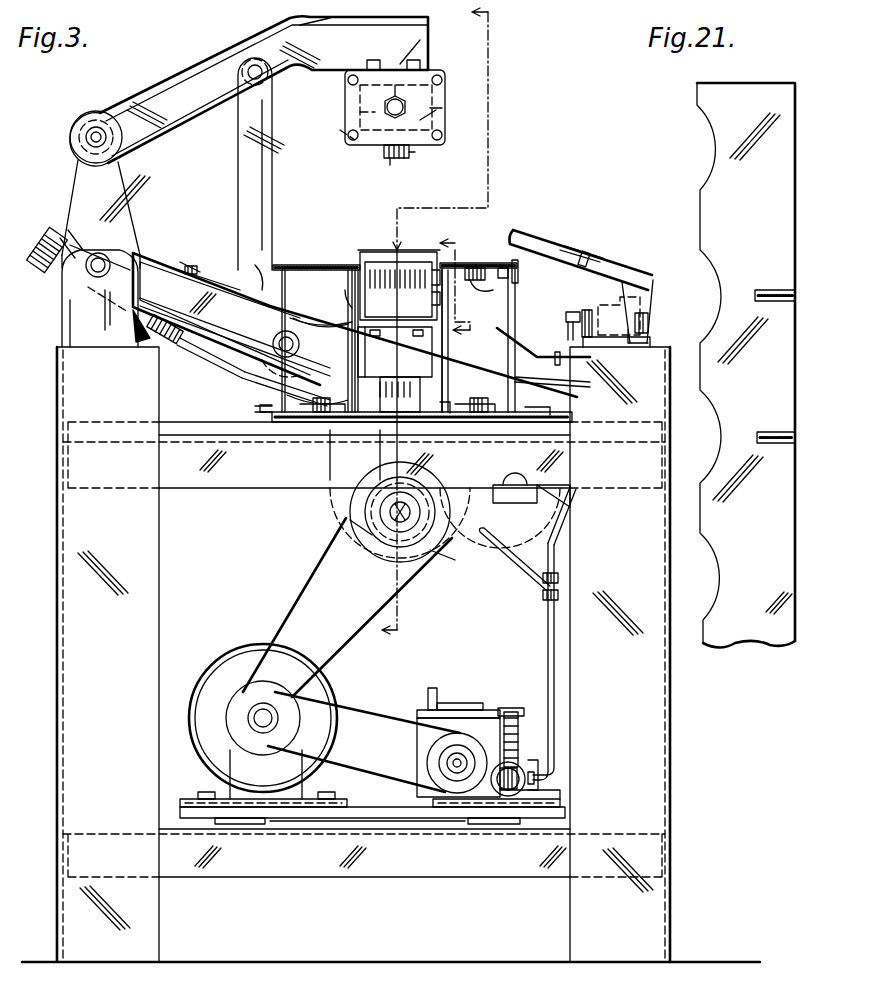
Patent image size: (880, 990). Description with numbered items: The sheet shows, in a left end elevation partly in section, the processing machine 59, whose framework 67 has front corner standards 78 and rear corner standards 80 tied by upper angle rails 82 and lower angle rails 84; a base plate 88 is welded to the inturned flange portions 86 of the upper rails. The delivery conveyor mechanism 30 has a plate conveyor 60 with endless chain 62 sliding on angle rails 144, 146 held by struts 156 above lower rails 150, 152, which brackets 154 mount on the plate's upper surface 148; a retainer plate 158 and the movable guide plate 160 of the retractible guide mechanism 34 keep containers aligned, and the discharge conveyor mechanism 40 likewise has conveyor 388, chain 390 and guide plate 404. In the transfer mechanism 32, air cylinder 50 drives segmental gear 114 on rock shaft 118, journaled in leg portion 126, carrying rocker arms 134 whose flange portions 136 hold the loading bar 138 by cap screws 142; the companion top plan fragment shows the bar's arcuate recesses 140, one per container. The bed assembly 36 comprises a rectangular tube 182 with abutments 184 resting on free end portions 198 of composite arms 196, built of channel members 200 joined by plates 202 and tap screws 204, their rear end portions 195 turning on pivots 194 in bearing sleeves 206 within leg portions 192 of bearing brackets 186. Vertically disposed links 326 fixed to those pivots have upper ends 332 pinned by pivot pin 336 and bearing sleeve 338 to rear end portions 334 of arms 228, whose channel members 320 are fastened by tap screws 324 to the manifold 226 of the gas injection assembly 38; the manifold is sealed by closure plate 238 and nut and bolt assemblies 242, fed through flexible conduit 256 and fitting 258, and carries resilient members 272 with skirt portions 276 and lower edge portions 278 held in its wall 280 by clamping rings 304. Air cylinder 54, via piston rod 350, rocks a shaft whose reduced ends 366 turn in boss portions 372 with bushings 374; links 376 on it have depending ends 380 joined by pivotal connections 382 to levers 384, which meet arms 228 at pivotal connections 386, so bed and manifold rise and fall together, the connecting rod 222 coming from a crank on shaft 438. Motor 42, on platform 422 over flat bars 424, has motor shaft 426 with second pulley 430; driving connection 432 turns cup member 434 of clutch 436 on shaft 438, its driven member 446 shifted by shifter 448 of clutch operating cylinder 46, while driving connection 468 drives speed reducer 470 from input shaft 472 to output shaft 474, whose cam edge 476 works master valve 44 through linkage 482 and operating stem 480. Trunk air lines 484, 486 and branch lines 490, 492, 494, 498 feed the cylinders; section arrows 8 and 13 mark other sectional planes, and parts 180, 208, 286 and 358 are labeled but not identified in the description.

In FIG. 3, the section line 8 is at (442, 324).
In FIG. 3, the section line 13 is at (467, 288).
In FIG. 3, the delivery conveyor mechanism 30 is at (519, 238).
In FIG. 3, the container transfer or loading mechanism 32 is at (622, 281).
In FIG. 3, the retractible container guide mechanism 34 is at (455, 345).
In FIG. 3, the reciprocable container-supporting bed assembly 36 is at (409, 244).
In FIG. 3, the gas injection assembly 38 is at (466, 79).
In FIG. 3, the discharge conveyor mechanism 40 is at (314, 244).
In FIG. 3, the motor 42 is at (238, 662).
In FIG. 3, the cam operated master air control valve assembly 44 is at (559, 792).
In FIG. 3, the clutch operating mechanism 46 is at (338, 546).
In FIG. 3, the air pressure operated cylinder 50 is at (632, 338).
In FIG. 3, the air pressure operated cylinder 54 is at (140, 318).
In FIG. 3, the processing machine 59 is at (531, 181).
In FIG. 3, the plate type endless conveyor 60 is at (470, 262).
In FIG. 3, the endless chain 62 is at (505, 300).
In FIG. 3, the framework 67 is at (680, 786).
In FIG. 3, the front corner standards 78 is at (676, 898).
In FIG. 3, the rear corner standards 80 is at (90, 916).
In FIG. 3, the upper angle rails 82 is at (64, 463).
In FIG. 3, the lower angle rails 84 is at (66, 855).
In FIG. 3, the inturned flange portions 86 is at (63, 446).
In FIG. 3, the rectangular base plate 88 is at (160, 480).
In FIG. 3, the segmental gear 114 is at (555, 495).
In FIG. 3, the horizontal rock shaft 118 is at (513, 503).
In FIG. 3, the depending leg portion 126 is at (472, 490).
In FIG. 3, the rocker arms 134 is at (645, 288).
In FIG. 3, the rearwardly projecting flange portion 136 is at (620, 290).
In FIG. 3, the loading bar 138 is at (525, 232).
In FIG. 21, the loading bar 138 is at (755, 640).
In FIG. 21, the arcuately formed recesses 140 is at (710, 136).
In FIG. 3, the cap screws 142 is at (586, 252).
In FIG. 3, the angle rail 144 is at (490, 272).
In FIG. 3, the angle rail 146 is at (285, 272).
In FIG. 3, the upper surface 148 is at (205, 412).
In FIG. 3, the angle rail 150 is at (333, 393).
In FIG. 3, the angle rail 152 is at (292, 425).
In FIG. 3, the angular brackets 154 is at (262, 425).
In FIG. 3, the perpendicular struts 156 is at (273, 342).
In FIG. 3, the guide or retainer plate 158 is at (495, 270).
In FIG. 3, the vertically movable guide plate 160 is at (432, 290).
In FIG. 3, the connector 180 is at (432, 300).
In FIG. 3, the rectangular tube 182 is at (376, 330).
In FIG. 3, the upwardly projecting abutment 184 is at (368, 250).
In FIG. 3, the U-shaped bearing brackets 186 is at (72, 328).
In FIG. 3, the upstanding leg portions 192 is at (78, 305).
In FIG. 3, the horizontally disposed pivots 194 is at (100, 248).
In FIG. 3, the rear end portions 195 is at (80, 240).
In FIG. 3, the composite arms 196 is at (192, 258).
In FIG. 3, the free end portions 198 is at (433, 362).
In FIG. 3, the channel-shaped members 200 is at (215, 275).
In FIG. 3, the plates 202 is at (352, 312).
In FIG. 3, the tap screws 204 is at (404, 340).
In FIG. 3, the bronze bearing sleeves 206 is at (112, 262).
In FIG. 3, the post 208 is at (352, 296).
In FIG. 3, the connecting rod 222 is at (355, 428).
In FIG. 3, the manifold 226 is at (434, 90).
In FIG. 3, the composite arms 228 is at (184, 53).
In FIG. 3, the second closure plate 238 is at (442, 110).
In FIG. 3, the nut and bolt assemblies 242 is at (353, 74).
In FIG. 3, the flexible conduit 256 is at (386, 106).
In FIG. 3, the fitting 258 is at (394, 85).
In FIG. 3, the funnel-shaped member 272 is at (384, 152).
In FIG. 3, the skirt portion 276 is at (412, 150).
In FIG. 3, the rounded lower marginal edge portion 278 is at (392, 160).
In FIG. 3, the wall 280 is at (418, 122).
In FIG. 3, the panel marking 286 is at (360, 118).
In FIG. 3, the clamping ring 304 is at (340, 140).
In FIG. 3, the channel-shaped members 320 is at (330, 13).
In FIG. 3, the tap screws 324 is at (355, 65).
In FIG. 3, the vertically disposed links 326 is at (90, 182).
In FIG. 3, the upper ends 332 is at (84, 113).
In FIG. 3, the rear end portions 334 is at (74, 121).
In FIG. 3, the pivot pin 336 is at (86, 134).
In FIG. 3, the bearing sleeve 338 is at (91, 139).
In FIG. 3, the piston rod 350 is at (145, 322).
In FIG. 3, the guide arc 358 is at (310, 348).
In FIG. 3, the reduced ends 366 is at (235, 375).
In FIG. 3, the boss portion 372 is at (265, 335).
In FIG. 3, the bushing 374 is at (262, 325).
In FIG. 3, the link 376 is at (265, 383).
In FIG. 3, the depending free end 380 is at (300, 320).
In FIG. 3, the pivotal connection 382 is at (255, 410).
In FIG. 3, the vertically disposed lever 384 is at (240, 160).
In FIG. 3, the pivotal connection 386 is at (252, 62).
In FIG. 3, the plate type endless conveyor 388 is at (295, 262).
In FIG. 3, the endless chain 390 is at (270, 276).
In FIG. 3, the guide plate 404 is at (258, 212).
In FIG. 3, the platform 422 is at (392, 824).
In FIG. 3, the flat bars 424 is at (250, 824).
In FIG. 3, the motor shaft 426 is at (256, 722).
In FIG. 3, the second pulley 430 is at (262, 742).
In FIG. 3, the driving connection 432 is at (300, 578).
In FIG. 3, the cup member 434 is at (380, 555).
In FIG. 3, the friction disc type clutch 436 is at (441, 535).
In FIG. 3, the shaft 438 is at (366, 506).
In FIG. 3, the driven member 446 is at (418, 545).
In FIG. 3, the shifter 448 is at (388, 512).
In FIG. 3, the driving connection 468 is at (362, 712).
In FIG. 3, the combined speed reducer and transmission device 470 is at (469, 699).
In FIG. 3, the input shaft 472 is at (447, 754).
In FIG. 3, the output shaft 474 is at (533, 760).
In FIG. 3, the peripheral edge 476 is at (512, 710).
In FIG. 3, the operating stem 480 is at (510, 796).
In FIG. 3, the linkage 482 is at (530, 715).
In FIG. 3, the trunk air line 484 is at (595, 375).
In FIG. 3, the trunk air line 486 is at (556, 655).
In FIG. 3, the branch line 490 is at (575, 312).
In FIG. 3, the branch line 492 is at (557, 335).
In FIG. 3, the branch line 494 is at (560, 520).
In FIG. 3, the branch line 498 is at (200, 283).